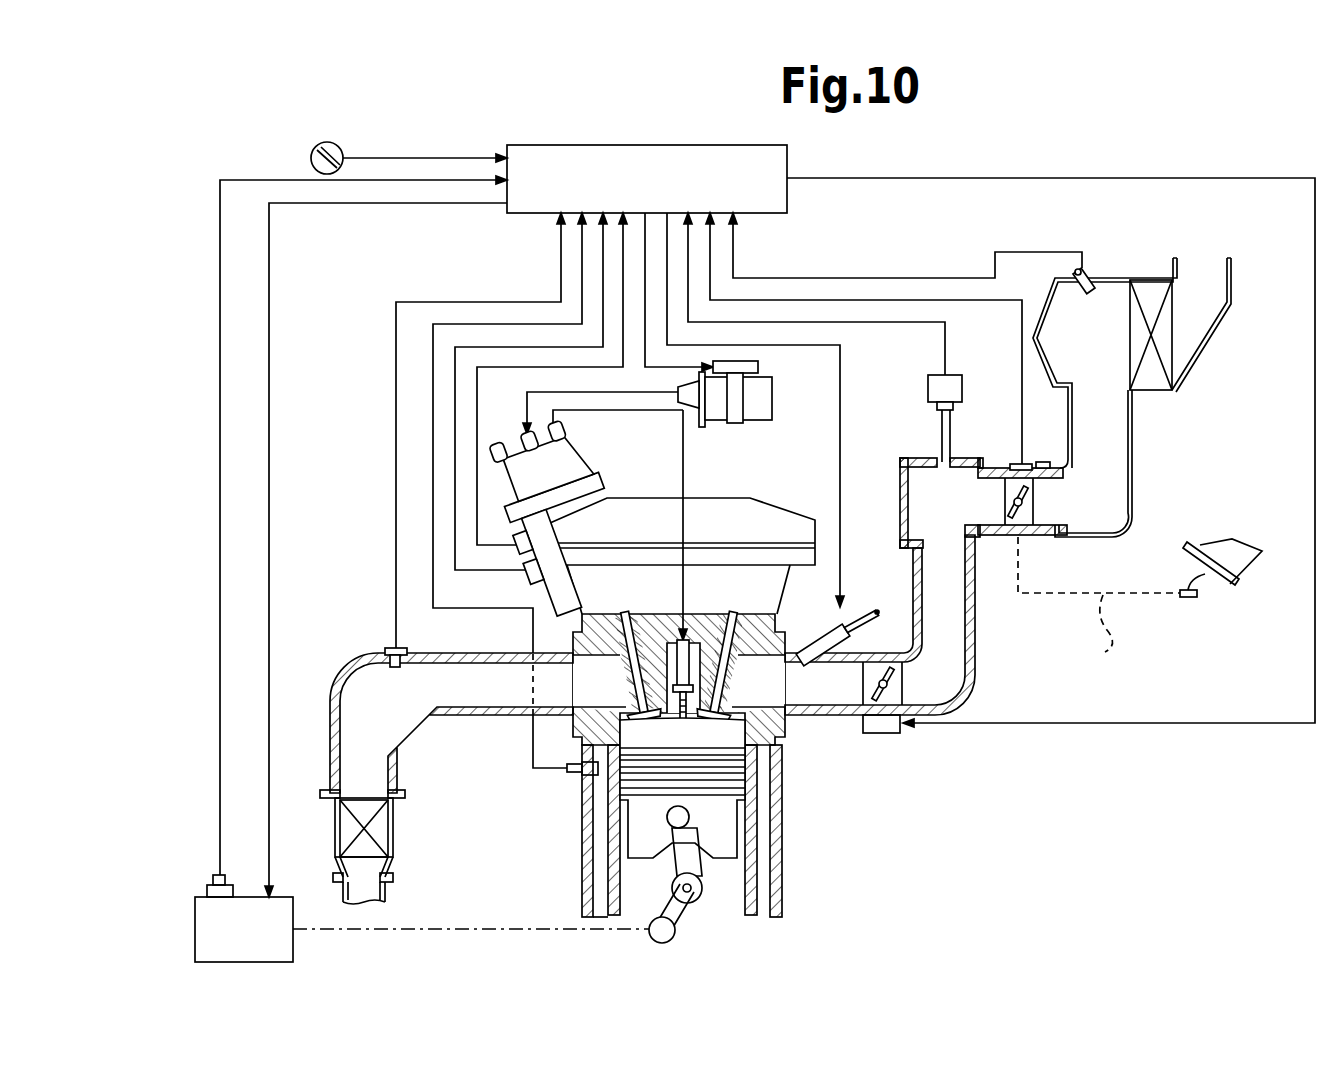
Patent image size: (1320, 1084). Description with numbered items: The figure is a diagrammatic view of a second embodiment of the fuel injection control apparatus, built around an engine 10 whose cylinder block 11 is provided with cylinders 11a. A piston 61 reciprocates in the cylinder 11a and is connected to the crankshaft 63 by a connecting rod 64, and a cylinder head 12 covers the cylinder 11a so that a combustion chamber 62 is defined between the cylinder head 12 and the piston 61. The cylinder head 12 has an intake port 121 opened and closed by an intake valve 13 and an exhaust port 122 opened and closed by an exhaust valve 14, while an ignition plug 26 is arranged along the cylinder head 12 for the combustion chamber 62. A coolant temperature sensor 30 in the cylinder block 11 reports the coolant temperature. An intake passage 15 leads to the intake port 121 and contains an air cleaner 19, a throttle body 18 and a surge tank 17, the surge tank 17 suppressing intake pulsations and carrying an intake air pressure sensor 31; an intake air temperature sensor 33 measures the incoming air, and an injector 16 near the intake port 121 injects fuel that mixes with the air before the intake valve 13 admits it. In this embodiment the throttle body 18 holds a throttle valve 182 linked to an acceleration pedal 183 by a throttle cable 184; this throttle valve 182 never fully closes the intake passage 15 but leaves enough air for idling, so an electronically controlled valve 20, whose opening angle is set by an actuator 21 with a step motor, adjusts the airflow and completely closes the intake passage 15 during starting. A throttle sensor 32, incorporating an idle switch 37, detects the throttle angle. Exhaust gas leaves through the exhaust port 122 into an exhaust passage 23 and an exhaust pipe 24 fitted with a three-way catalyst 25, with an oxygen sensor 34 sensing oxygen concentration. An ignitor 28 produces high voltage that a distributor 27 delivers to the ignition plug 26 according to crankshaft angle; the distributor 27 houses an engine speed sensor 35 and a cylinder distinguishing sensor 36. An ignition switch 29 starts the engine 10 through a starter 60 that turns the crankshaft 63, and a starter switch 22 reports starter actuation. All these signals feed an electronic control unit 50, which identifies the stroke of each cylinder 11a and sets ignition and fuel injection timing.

The engine 10 is at (795, 872).
The cylinder block 11 is at (782, 786).
The cylinder 11a is at (630, 880).
The cylinder head 12 is at (783, 614).
The intake port 121 is at (780, 662).
The exhaust port 122 is at (597, 682).
The intake valve 13 is at (725, 697).
The exhaust valve 14 is at (642, 700).
The intake passage 15 is at (973, 628).
The injector 16 is at (845, 629).
The surge tank 17 is at (917, 502).
The throttle body 18 is at (1043, 530).
The throttle valve 182 is at (1033, 493).
The acceleration pedal 183 is at (1202, 577).
The throttle cable 184 is at (1099, 609).
The air cleaner 19 is at (1147, 277).
The electronically controlled valve 20 is at (893, 683).
The actuator 21 is at (880, 733).
The starter switch 22 is at (208, 882).
The exhaust passage 23 is at (452, 653).
The exhaust pipe 24 is at (393, 803).
The three-way catalyst 25 is at (383, 835).
The ignition plug 26 is at (693, 624).
The distributor 27 is at (586, 440).
The ignitor 28 is at (760, 422).
The ignition switch 29 is at (344, 150).
The coolant temperature sensor 30 is at (566, 772).
The intake air pressure sensor 31 is at (927, 388).
The throttle sensor 32 is at (1015, 464).
The intake air temperature sensor 33 is at (1088, 270).
The oxygen sensor 34 is at (390, 648).
The engine speed sensor 35 is at (532, 580).
The cylinder distinguishing sensor 36 is at (520, 551).
The idle switch 37 is at (1033, 462).
The electronic control unit 50 is at (787, 198).
The starter 60 is at (195, 928).
The piston 61 is at (727, 830).
The combustion chamber 62 is at (736, 737).
The crankshaft 63 is at (672, 938).
The connecting rod 64 is at (697, 863).